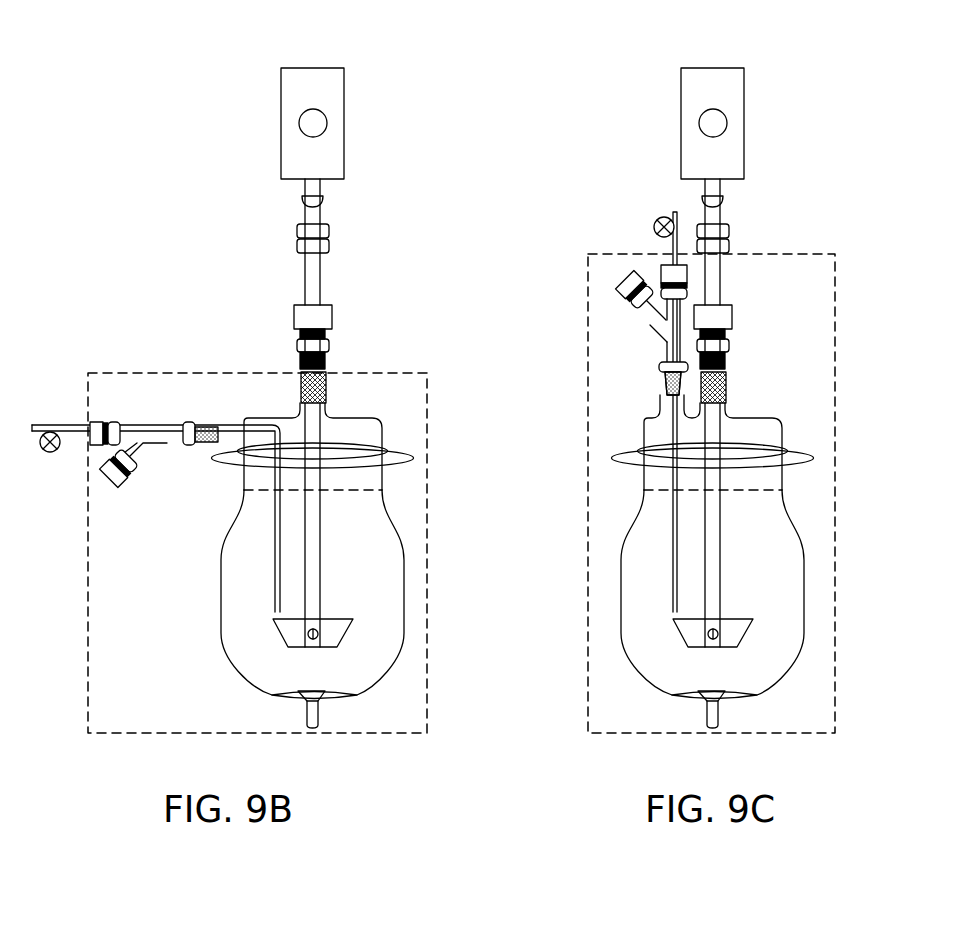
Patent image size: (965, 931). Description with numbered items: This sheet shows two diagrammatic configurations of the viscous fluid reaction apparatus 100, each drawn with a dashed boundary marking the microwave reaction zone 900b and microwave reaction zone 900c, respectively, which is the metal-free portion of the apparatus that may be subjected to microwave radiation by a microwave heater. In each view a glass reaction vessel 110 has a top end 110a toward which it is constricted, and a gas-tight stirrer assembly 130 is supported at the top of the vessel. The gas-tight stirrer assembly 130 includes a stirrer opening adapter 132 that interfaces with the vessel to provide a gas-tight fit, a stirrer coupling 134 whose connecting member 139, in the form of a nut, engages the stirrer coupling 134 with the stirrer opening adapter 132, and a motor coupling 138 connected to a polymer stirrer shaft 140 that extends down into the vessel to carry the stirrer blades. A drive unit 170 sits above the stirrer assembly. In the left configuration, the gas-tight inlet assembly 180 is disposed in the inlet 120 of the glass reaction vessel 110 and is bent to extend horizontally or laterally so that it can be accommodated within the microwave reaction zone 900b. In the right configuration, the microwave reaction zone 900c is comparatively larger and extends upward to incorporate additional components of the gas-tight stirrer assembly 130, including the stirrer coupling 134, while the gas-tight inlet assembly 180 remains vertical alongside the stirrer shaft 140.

In FIG. 9B, the viscous fluid reaction apparatus 100 is at (385, 82).
In FIG. 9C, the viscous fluid reaction apparatus 100 is at (789, 137).
In FIG. 9B, the motor 170 is at (281, 121).
In FIG. 9C, the motor 170 is at (664, 123).
In FIG. 9B, the gas-tight stirrer assembly 130 is at (338, 273).
In FIG. 9C, the gas-tight stirrer assembly 130 is at (769, 356).
In FIG. 9B, the stirrer coupling 134 is at (343, 311).
In FIG. 9C, the stirrer coupling 134 is at (762, 304).
In FIG. 9B, the connecting member 139 is at (329, 347).
In FIG. 9C, the connecting member 139 is at (763, 344).
In FIG. 9B, the stirrer opening adapter 132 is at (327, 397).
In FIG. 9C, the stirrer opening adapter 132 is at (763, 387).
In FIG. 9B, the top end 110a is at (372, 418).
In FIG. 9C, the top end 110a is at (768, 442).
In FIG. 9B, the glass reaction vessel 110 is at (403, 543).
In FIG. 9C, the glass reaction vessel 110 is at (765, 609).
In FIG. 9B, the stirrer shaft 140 is at (342, 514).
In FIG. 9C, the stirrer shaft 140 is at (786, 568).
In FIG. 9B, the microwave reaction zone 900b is at (448, 619).
In FIG. 9C, the microwave reaction zone 900c is at (771, 493).
In FIG. 9B, the gas-tight inlet assembly 180 is at (156, 414).
In FIG. 9C, the gas-tight inlet assembly 180 is at (581, 293).
In FIG. 9B, the inlet 120 is at (203, 414).
In FIG. 9C, the motor coupling 138 is at (744, 393).